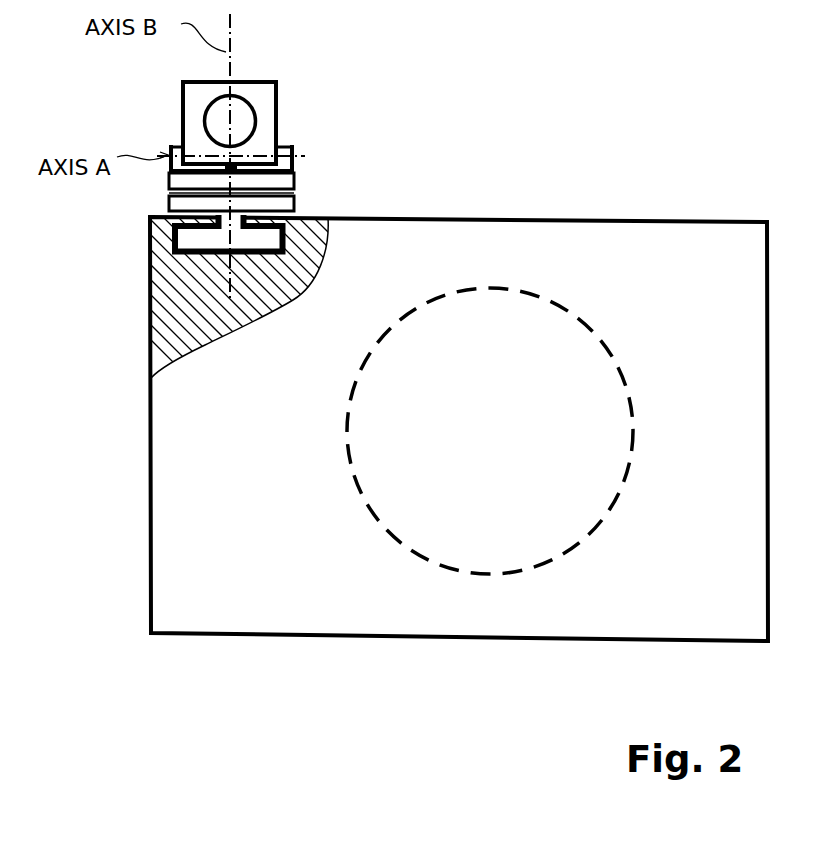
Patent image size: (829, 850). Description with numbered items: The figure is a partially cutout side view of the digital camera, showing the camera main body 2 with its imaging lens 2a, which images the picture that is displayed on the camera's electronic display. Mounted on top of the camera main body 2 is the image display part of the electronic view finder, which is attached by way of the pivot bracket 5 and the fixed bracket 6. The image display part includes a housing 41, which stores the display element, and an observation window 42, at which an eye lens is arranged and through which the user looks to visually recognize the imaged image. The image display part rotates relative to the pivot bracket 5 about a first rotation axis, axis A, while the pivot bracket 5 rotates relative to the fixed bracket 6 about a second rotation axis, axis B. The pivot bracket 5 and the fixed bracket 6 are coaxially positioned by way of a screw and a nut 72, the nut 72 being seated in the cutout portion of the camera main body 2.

The camera main body 2 is at (567, 241).
The imaging lens 2a is at (477, 312).
The pivot bracket 5 is at (282, 184).
The fixed bracket 6 is at (280, 207).
The housing 41 is at (190, 101).
The observation window 42 is at (243, 119).
The nut 72 is at (151, 268).